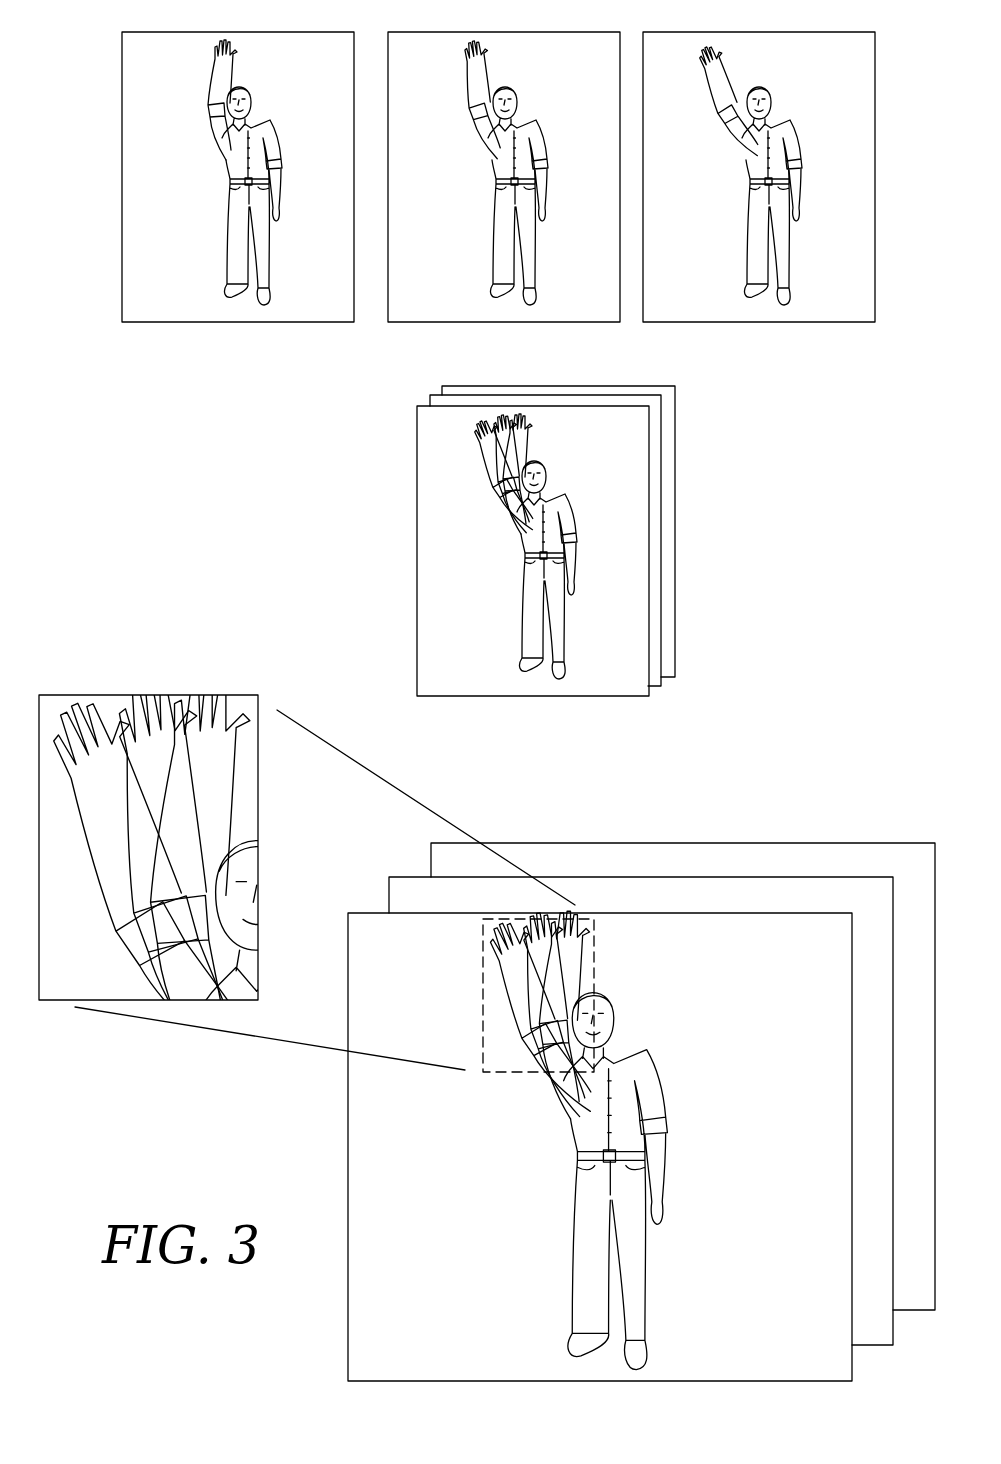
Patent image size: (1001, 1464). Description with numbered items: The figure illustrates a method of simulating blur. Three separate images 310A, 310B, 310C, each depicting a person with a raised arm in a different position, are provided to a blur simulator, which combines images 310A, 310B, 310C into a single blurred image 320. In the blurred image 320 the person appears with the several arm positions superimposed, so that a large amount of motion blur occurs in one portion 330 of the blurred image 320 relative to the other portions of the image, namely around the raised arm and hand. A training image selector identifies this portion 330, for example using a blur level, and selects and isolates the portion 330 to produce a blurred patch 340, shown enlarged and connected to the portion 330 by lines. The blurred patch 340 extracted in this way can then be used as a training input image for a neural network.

The image 310A is at (122, 62).
The image 310B is at (397, 323).
The image 310C is at (876, 313).
The blurred image 320 is at (602, 696).
The portion 330 is at (595, 967).
The blurred patch 340 is at (258, 712).